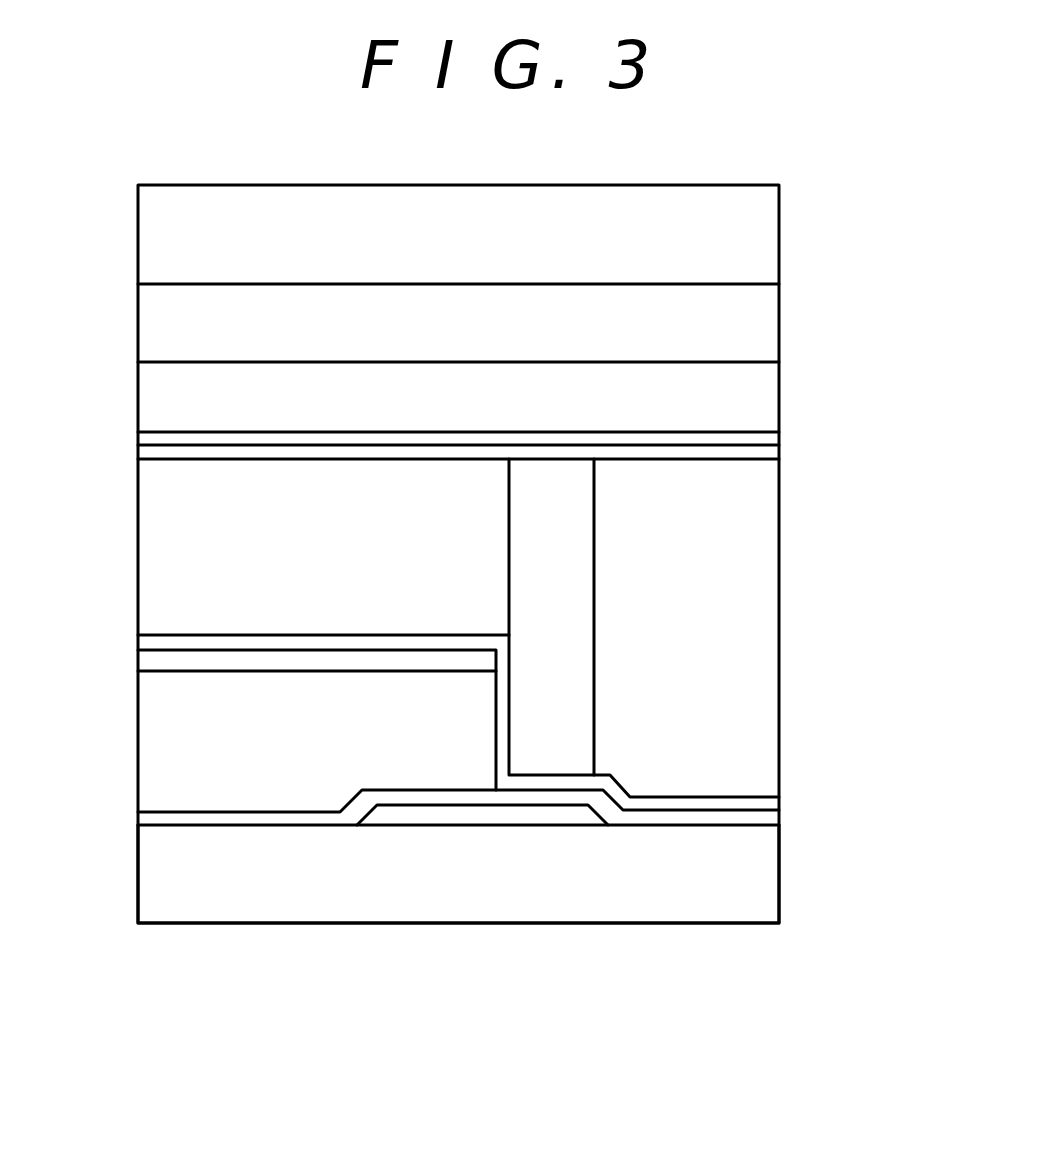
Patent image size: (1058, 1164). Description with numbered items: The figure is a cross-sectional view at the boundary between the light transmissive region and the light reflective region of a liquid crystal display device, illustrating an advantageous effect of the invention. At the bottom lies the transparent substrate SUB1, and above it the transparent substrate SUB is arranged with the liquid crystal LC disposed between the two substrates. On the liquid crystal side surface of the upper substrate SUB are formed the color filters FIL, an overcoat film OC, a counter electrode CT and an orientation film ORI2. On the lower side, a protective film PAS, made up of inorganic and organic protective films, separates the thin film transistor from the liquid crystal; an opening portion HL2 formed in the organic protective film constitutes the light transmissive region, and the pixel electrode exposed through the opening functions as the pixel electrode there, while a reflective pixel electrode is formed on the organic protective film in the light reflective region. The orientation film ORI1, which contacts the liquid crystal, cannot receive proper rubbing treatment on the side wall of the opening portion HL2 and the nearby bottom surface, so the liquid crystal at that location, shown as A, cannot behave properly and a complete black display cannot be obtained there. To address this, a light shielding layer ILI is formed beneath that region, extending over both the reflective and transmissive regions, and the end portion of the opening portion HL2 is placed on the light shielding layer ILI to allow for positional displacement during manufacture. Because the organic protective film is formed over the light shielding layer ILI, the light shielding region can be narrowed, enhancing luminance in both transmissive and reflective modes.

The transparent substrate SUB is at (766, 244).
The color filters FIL is at (758, 323).
The overcoat film OC is at (755, 391).
The counter electrode CT is at (767, 438).
The orientation film ORI2 is at (768, 452).
The liquid crystal LC is at (765, 583).
The liquid crystal portion A is at (558, 485).
The orientation film ORI1 is at (150, 643).
The opening portion HL2 is at (497, 718).
The protective film PAS is at (155, 733).
The light shielding layer ILI is at (512, 812).
The transparent substrate SUB1 is at (765, 880).